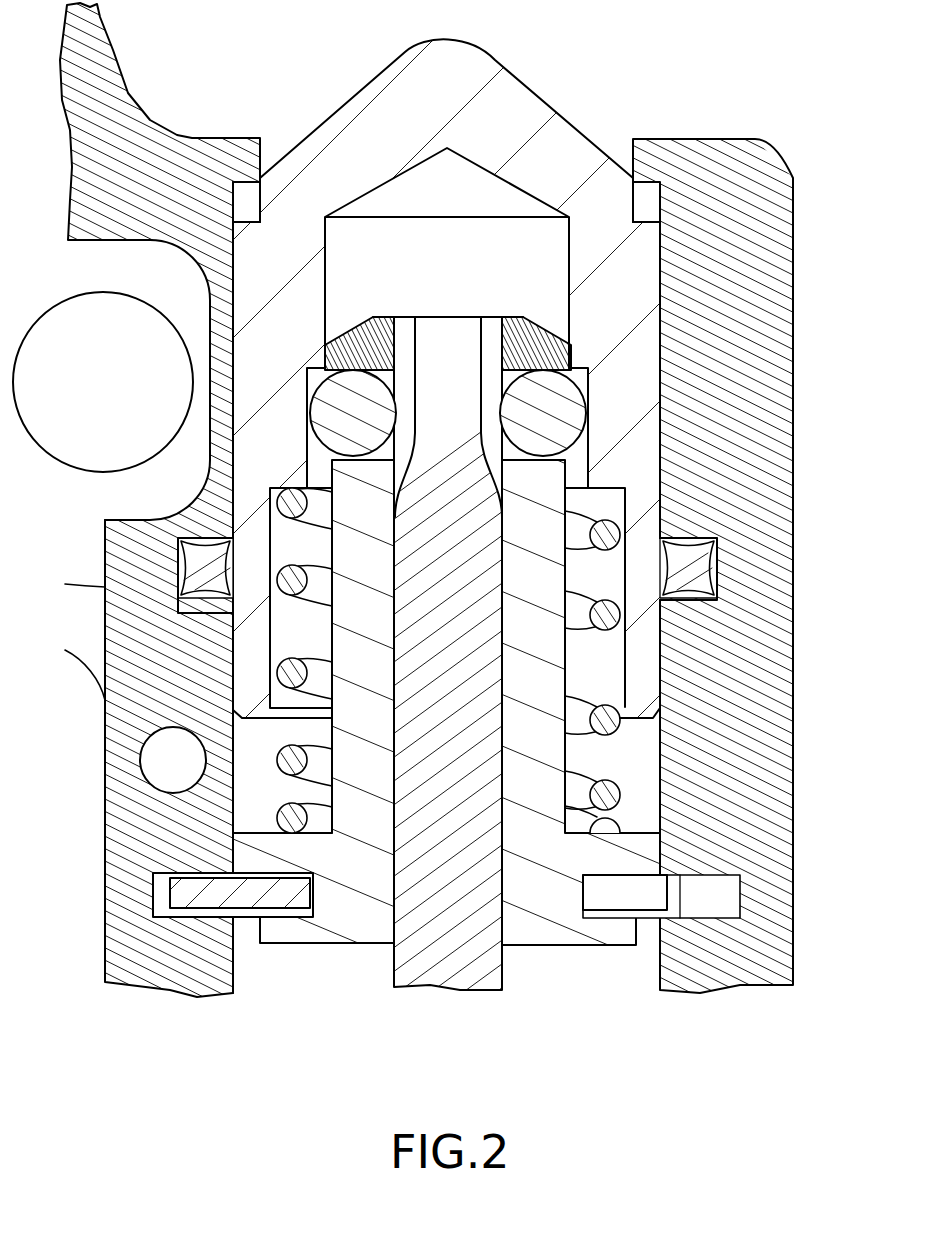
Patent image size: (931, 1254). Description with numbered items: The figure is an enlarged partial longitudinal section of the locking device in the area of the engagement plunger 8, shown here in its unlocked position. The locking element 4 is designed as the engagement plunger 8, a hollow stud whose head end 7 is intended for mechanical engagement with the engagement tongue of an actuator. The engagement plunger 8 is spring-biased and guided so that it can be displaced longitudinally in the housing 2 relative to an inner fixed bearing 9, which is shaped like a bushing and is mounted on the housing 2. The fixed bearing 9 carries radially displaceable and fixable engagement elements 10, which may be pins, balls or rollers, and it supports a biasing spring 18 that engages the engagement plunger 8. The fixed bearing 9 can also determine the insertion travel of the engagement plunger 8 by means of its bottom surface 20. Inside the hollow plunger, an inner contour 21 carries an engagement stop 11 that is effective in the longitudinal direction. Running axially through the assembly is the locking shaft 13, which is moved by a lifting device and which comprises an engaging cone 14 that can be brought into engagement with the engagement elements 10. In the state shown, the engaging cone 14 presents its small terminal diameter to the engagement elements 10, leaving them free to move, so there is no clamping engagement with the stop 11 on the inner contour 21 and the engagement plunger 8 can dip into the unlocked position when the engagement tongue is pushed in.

The housing 2 is at (797, 752).
The locking element 4 is at (683, 460).
The head end 7 is at (513, 110).
The engagement plunger 8 is at (650, 433).
The fixed bearing 9 is at (565, 915).
The engagement elements 10 is at (408, 406).
The engagement stop 11 is at (574, 377).
The locking shaft 13 is at (407, 952).
The engaging cone 14 is at (463, 336).
The biasing spring 18 is at (603, 790).
The bottom surface 20 is at (256, 833).
The inner contour 21 is at (325, 277).